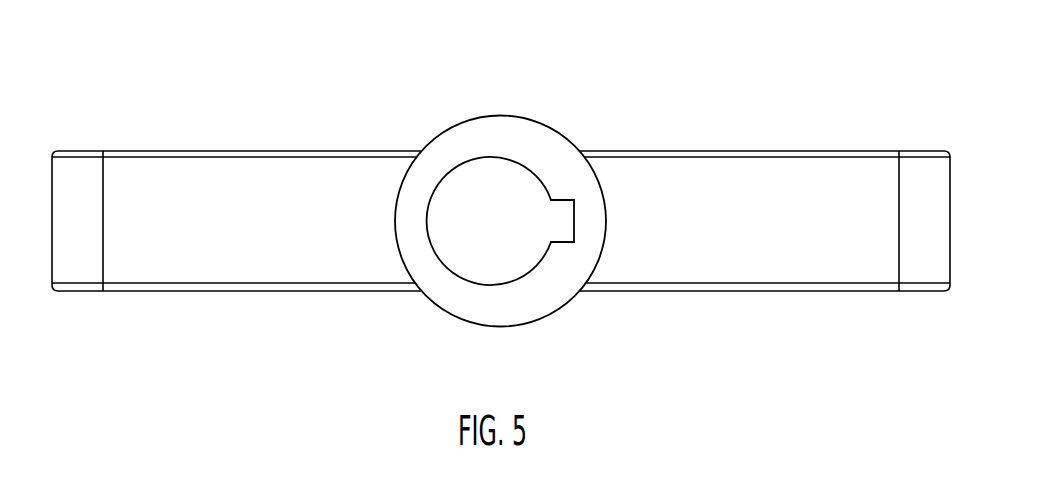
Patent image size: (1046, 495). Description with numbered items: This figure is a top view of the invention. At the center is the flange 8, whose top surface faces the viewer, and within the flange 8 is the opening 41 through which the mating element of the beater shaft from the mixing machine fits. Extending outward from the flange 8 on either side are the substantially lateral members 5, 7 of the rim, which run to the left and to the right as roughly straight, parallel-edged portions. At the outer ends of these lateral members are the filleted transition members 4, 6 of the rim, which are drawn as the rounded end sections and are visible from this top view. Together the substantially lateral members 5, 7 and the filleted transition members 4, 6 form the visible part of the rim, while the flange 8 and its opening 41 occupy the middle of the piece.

The filleted transition member 4 is at (84, 170).
The substantially lateral member 5 is at (267, 185).
The filleted transition member 6 is at (918, 170).
The substantially lateral member 7 is at (734, 185).
The flange 8 is at (472, 130).
The opening 41 is at (492, 208).